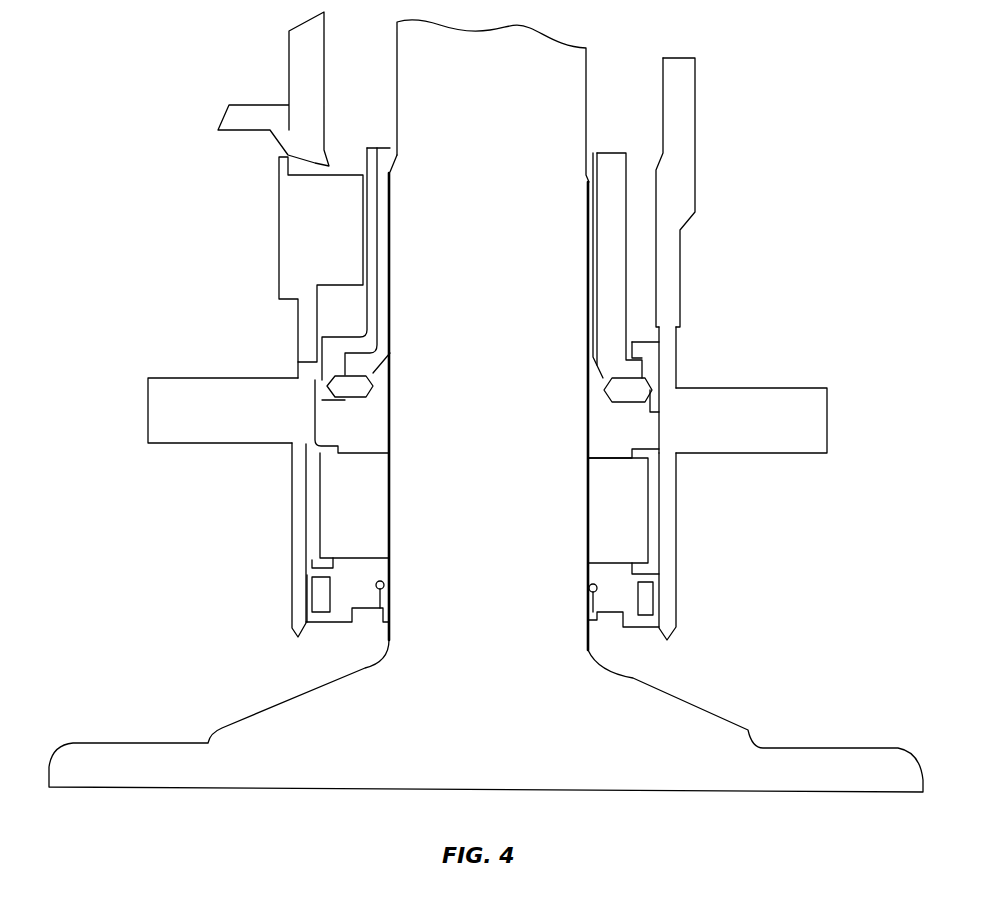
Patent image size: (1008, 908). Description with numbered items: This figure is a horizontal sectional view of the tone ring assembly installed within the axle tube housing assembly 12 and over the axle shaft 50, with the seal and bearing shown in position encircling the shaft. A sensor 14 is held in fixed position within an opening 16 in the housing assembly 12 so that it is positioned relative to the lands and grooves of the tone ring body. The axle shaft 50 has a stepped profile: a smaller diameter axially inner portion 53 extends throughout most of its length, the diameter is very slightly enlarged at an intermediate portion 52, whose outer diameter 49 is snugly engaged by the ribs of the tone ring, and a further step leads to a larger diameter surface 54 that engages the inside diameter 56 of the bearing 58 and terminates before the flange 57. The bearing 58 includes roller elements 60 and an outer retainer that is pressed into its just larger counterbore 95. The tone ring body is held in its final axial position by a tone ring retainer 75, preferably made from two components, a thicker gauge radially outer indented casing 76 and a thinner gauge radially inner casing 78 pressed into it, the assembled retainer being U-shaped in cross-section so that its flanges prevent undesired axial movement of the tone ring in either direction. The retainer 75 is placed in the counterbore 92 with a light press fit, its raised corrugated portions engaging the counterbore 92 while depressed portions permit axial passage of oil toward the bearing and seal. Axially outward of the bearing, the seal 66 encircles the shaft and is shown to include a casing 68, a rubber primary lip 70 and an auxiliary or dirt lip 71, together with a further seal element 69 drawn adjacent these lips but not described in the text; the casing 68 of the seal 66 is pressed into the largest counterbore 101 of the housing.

The axle tube housing assembly 12 is at (255, 534).
The sensor 14 is at (287, 201).
The opening 16 is at (324, 135).
The outer diameter 49 is at (588, 280).
The axle shaft 50 is at (397, 78).
The intermediate portion 52 is at (586, 166).
The axially inner portion 53 is at (587, 66).
The larger diameter surface 54 is at (390, 492).
The inside diameter 56 is at (592, 539).
The flange 57 is at (262, 708).
The bearing 58 is at (668, 506).
The roller elements 60 is at (597, 481).
The seal 66 is at (392, 606).
The casing 68 is at (312, 625).
The retainer 69 is at (665, 568).
The rubber primary lip 70 is at (385, 583).
The auxiliary dirt lip 71 is at (390, 621).
The tone ring retainer 75 is at (676, 360).
The radially outer indented casing 76 is at (827, 406).
The radially inner casing 78 is at (648, 412).
The counterbore 92 is at (658, 327).
The counterbore 95 is at (322, 440).
The counterbore 101 is at (677, 622).